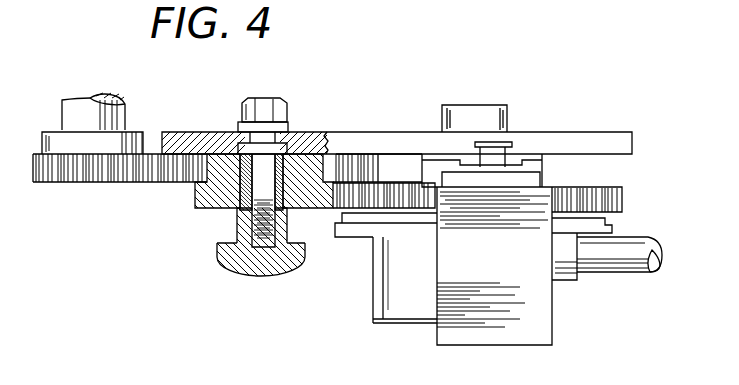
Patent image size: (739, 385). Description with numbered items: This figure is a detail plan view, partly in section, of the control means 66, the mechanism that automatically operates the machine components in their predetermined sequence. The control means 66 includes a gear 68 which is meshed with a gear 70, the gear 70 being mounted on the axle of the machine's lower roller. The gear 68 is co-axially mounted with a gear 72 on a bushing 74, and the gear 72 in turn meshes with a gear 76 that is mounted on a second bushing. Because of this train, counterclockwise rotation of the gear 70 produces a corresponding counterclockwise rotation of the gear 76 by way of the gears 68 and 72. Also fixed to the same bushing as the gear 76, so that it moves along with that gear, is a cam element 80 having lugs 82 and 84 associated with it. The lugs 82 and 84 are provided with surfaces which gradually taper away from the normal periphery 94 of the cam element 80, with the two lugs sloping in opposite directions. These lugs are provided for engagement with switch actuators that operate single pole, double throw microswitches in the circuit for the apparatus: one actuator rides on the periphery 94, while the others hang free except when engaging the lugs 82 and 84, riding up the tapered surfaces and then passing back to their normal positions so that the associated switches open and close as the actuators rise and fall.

The control means 66 is at (190, 277).
The gear 68 is at (172, 182).
The gear 70 is at (55, 182).
The gear 72 is at (212, 202).
The bushing 74 is at (293, 162).
The gear 76 is at (622, 196).
The cam element 80 is at (358, 236).
The lug 82 is at (374, 301).
The lug 84 is at (409, 316).
The normal periphery 94 is at (337, 228).